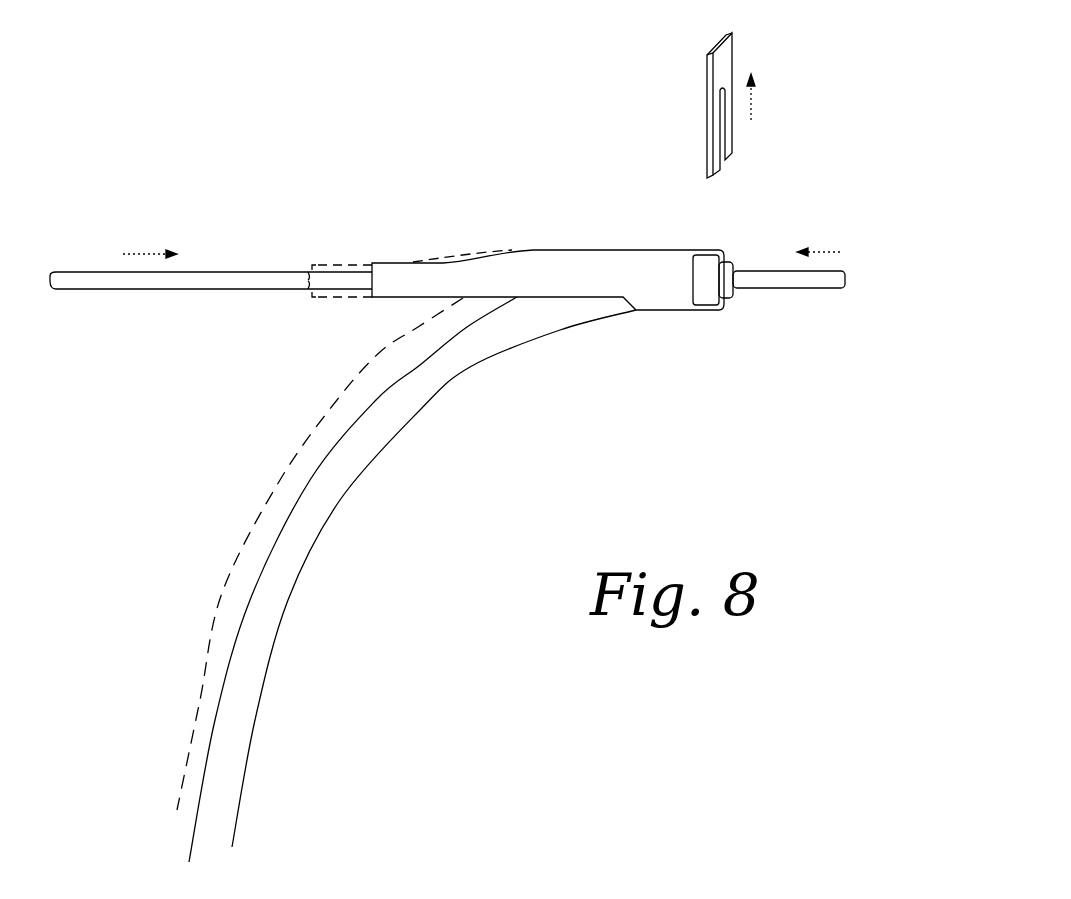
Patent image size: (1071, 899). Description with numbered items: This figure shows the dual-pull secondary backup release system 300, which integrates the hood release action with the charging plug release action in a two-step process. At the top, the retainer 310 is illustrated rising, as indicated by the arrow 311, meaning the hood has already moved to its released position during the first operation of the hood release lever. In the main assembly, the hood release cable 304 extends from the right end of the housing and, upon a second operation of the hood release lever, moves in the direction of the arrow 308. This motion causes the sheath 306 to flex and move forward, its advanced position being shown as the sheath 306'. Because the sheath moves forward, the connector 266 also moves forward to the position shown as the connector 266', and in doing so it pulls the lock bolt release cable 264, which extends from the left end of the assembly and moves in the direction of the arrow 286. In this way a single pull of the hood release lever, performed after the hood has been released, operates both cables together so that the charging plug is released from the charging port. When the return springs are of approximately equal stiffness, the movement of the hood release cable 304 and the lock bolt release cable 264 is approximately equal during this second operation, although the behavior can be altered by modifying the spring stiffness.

The lock bolt release cable 264 is at (110, 289).
The arrow 286 is at (143, 252).
The connector 266 is at (412, 253).
The connector (forward position) 266' is at (548, 260).
The secondary release system 300 is at (627, 342).
The hood release cable 304 is at (807, 289).
The sheath 306 is at (320, 554).
The sheath (forward position) 306' is at (412, 579).
The arrow 308 is at (838, 252).
The retainer 310 is at (707, 104).
The arrow 311 is at (756, 101).